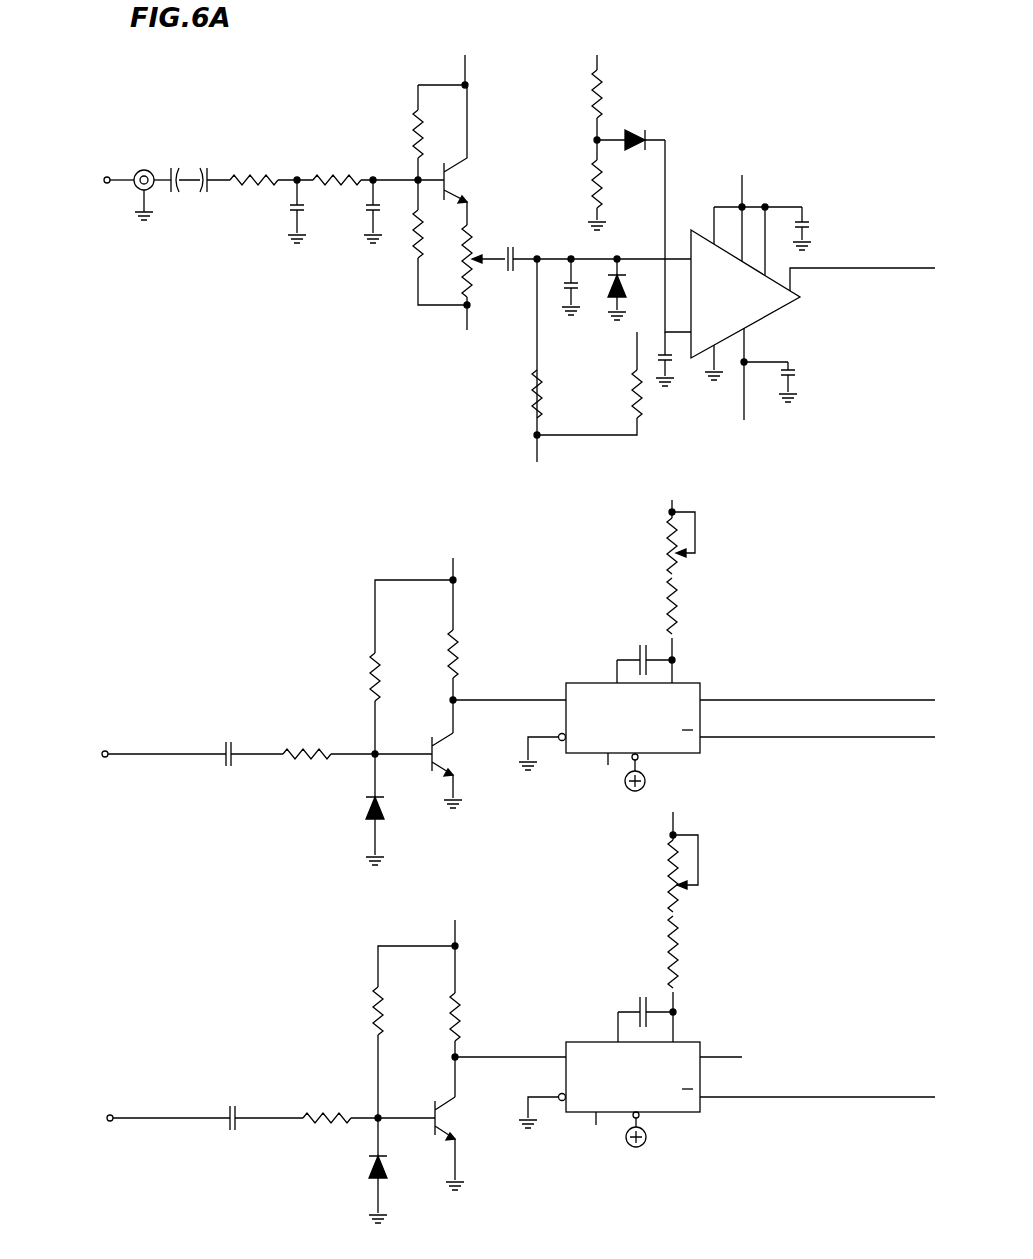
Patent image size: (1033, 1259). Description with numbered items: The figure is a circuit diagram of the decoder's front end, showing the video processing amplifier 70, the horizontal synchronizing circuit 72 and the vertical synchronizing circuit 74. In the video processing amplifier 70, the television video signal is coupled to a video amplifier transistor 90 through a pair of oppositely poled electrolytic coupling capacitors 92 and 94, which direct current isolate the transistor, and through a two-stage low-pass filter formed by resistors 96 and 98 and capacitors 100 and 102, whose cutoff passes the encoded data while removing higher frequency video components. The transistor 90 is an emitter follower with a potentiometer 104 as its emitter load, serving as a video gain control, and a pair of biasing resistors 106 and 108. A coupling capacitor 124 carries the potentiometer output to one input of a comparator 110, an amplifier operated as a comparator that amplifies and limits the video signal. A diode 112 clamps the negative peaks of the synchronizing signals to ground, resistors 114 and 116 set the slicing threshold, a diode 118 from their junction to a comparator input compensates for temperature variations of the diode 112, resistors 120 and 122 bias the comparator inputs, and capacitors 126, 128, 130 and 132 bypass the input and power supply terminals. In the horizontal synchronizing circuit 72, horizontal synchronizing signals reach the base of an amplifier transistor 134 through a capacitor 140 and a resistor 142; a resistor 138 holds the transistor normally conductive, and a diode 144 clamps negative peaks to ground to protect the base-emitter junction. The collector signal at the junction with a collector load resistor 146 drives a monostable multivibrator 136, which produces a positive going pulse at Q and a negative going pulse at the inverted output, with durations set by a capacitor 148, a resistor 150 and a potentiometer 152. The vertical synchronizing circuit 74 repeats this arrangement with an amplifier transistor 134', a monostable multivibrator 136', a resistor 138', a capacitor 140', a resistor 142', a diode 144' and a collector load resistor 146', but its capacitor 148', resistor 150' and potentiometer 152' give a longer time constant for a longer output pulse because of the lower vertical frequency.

The video processing amplifier 70 is at (546, 66).
The horizontal synchronizing circuit 72 is at (737, 596).
The vertical synchronizing circuit 74 is at (715, 932).
The video amplifier transistor 90 is at (452, 172).
The electrolytic coupling capacitor 92 is at (178, 192).
The electrolytic coupling capacitor 94 is at (203, 192).
The resistor 96 is at (254, 176).
The resistor 98 is at (337, 176).
The capacitor 100 is at (289, 207).
The capacitor 102 is at (366, 214).
The potentiometer 104 is at (474, 242).
The biasing resistor 106 is at (413, 268).
The biasing resistor 108 is at (413, 105).
The comparator 110 is at (692, 230).
The diode 112 is at (627, 290).
The resistor 114 is at (605, 90).
The resistor 116 is at (594, 180).
The diode 118 is at (640, 128).
The resistor 120 is at (534, 398).
The resistor 122 is at (644, 420).
The coupling capacitor 124 is at (506, 272).
The capacitor 126 is at (565, 290).
The capacitor 128 is at (670, 364).
The capacitor 130 is at (798, 370).
The capacitor 132 is at (808, 220).
The amplifier transistor 134 is at (471, 767).
The monostable multivibrator 136 is at (609, 739).
The resistor 138 is at (351, 669).
The capacitor 140 is at (203, 777).
The resistor 142 is at (309, 731).
The diode 144 is at (337, 831).
The collector load resistor 146 is at (486, 641).
The capacitor 148 is at (629, 654).
The resistor 150 is at (703, 614).
The potentiometer 152 is at (637, 546).
The amplifier transistor 134' is at (479, 1143).
The monostable multivibrator 136' is at (609, 1100).
The resistor 138' is at (344, 1004).
The capacitor 140' is at (210, 1138).
The resistor 142' is at (307, 1141).
The diode 144' is at (341, 1189).
The collector load resistor 146' is at (496, 1000).
The capacitor 148' is at (621, 1009).
The resistor 150' is at (718, 952).
The potentiometer 152' is at (633, 876).